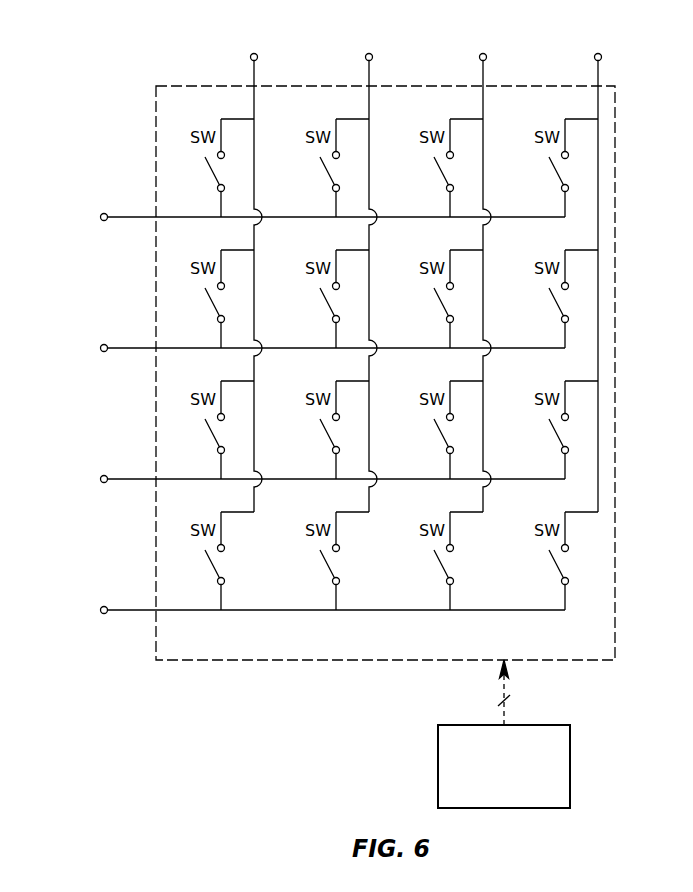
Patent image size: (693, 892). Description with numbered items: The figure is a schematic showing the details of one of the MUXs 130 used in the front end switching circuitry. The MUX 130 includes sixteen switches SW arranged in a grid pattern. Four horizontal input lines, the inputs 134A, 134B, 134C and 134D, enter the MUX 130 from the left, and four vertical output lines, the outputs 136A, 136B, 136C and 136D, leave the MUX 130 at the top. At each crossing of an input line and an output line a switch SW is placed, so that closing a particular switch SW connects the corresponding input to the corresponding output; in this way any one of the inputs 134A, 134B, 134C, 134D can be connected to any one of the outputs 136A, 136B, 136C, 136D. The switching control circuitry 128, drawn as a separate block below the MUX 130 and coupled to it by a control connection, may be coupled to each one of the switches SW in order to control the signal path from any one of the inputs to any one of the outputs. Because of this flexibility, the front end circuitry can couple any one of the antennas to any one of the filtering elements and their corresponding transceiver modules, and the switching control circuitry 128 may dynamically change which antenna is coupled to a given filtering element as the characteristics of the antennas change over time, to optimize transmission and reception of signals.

The output 136A is at (256, 54).
The output 136B is at (370, 54).
The output 136C is at (484, 54).
The output 136D is at (600, 54).
The input 134A is at (102, 214).
The input 134B is at (102, 344).
The input 134C is at (102, 476).
The input 134D is at (102, 606).
The MUX 130 is at (385, 373).
The switching control circuitry 128 is at (504, 734).